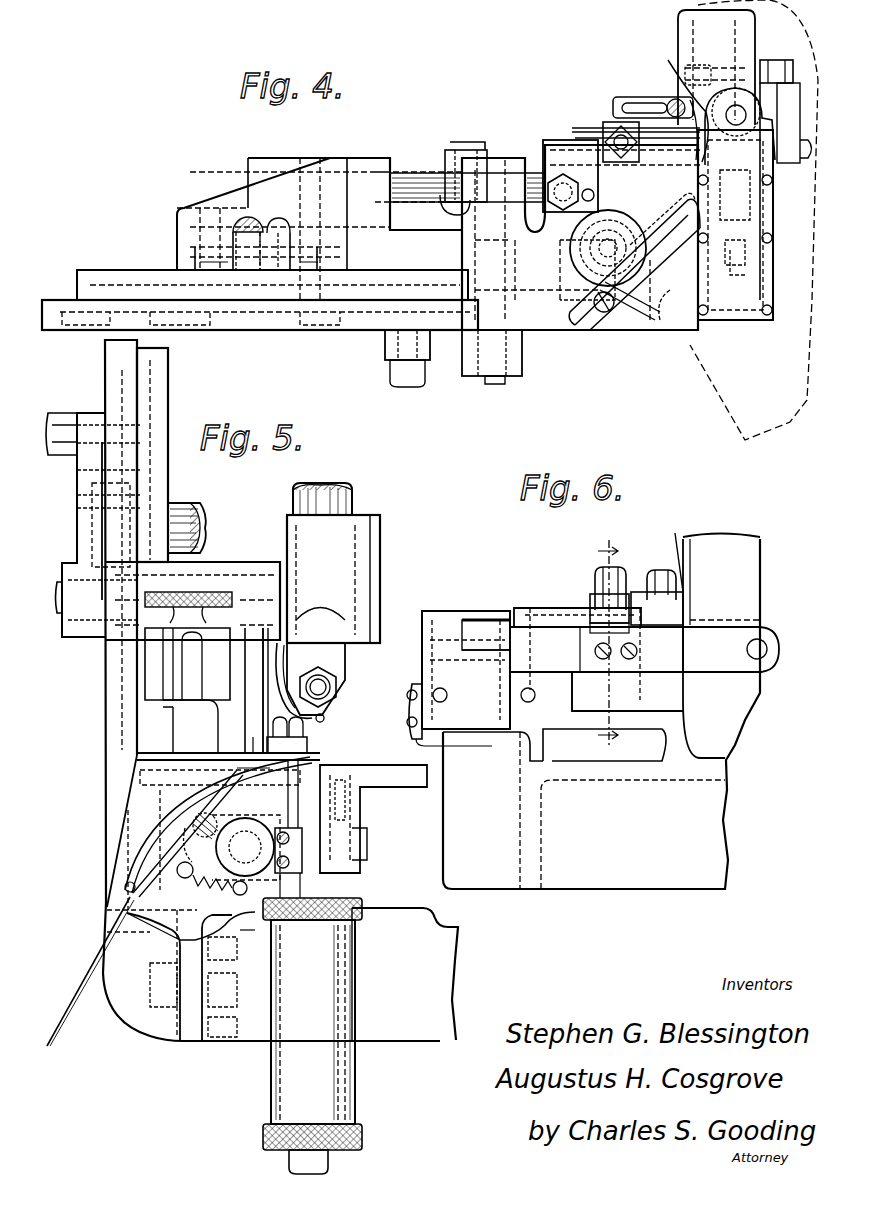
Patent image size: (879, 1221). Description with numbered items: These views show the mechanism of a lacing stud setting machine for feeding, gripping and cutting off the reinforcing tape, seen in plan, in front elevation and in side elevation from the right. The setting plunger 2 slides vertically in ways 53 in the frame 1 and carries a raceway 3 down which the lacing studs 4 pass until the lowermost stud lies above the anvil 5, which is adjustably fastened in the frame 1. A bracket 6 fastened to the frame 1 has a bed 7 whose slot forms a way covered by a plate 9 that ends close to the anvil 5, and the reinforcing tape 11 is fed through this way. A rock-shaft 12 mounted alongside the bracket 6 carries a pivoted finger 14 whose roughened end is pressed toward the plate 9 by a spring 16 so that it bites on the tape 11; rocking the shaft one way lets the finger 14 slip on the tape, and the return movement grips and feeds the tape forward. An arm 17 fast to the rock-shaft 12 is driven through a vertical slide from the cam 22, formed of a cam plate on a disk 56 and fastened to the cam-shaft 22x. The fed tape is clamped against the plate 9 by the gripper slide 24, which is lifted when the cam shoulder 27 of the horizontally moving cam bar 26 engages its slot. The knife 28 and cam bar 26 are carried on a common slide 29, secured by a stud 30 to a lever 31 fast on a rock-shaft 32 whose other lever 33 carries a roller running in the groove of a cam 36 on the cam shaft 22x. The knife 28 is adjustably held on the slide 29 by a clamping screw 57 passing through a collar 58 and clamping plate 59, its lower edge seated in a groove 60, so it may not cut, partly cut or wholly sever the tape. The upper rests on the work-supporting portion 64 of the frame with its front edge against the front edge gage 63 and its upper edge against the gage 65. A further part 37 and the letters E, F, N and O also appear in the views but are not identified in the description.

In FIG. 4, the frame 1 is at (580, 237).
In FIG. 5, the frame 1 is at (280, 801).
In FIG. 6, the frame 1 is at (601, 711).
In FIG. 5, the setting plunger 2 is at (342, 662).
In FIG. 5, the raceway 3 is at (287, 690).
In FIG. 5, the lacing studs 4 is at (330, 732).
In FIG. 4, the anvil 5 is at (732, 105).
In FIG. 5, the anvil 5 is at (288, 1057).
In FIG. 5, the bracket 6 is at (182, 945).
In FIG. 5, the bed 7 is at (133, 880).
In FIG. 4, the plate 9 is at (764, 276).
In FIG. 5, the plate 9 is at (150, 860).
In FIG. 5, the reinforcing tape 11 is at (88, 976).
In FIG. 4, the rock-shaft 12 is at (403, 180).
In FIG. 5, the rock-shaft 12 is at (246, 847).
In FIG. 5, the finger 14 is at (190, 833).
In FIG. 5, the spring 16 is at (212, 884).
In FIG. 4, the arm 17 is at (250, 208).
In FIG. 4, the cam 22 is at (140, 270).
In FIG. 5, the cam 22 is at (150, 396).
In FIG. 4, the cam-shaft 22x is at (250, 222).
In FIG. 5, the cam-shaft 22x is at (207, 525).
In FIG. 6, the gripper slide 24 is at (480, 620).
In FIG. 6, the cam bar 26 is at (596, 653).
In FIG. 6, the cam shoulder 27 is at (512, 650).
In FIG. 4, the knife 28 is at (585, 128).
In FIG. 5, the knife 28 is at (322, 770).
In FIG. 6, the knife 28 is at (545, 615).
In FIG. 4, the slide 29 is at (545, 148).
In FIG. 6, the slide 29 is at (644, 649).
In FIG. 4, the stud 30 is at (468, 142).
In FIG. 4, the lever 31 is at (450, 190).
In FIG. 5, the lever 31 is at (272, 763).
In FIG. 4, the rock-shaft 32 is at (492, 384).
In FIG. 5, the rock-shaft 32 is at (56, 604).
In FIG. 4, the lever 33 is at (447, 355).
In FIG. 5, the lever 33 is at (78, 512).
In FIG. 4, the cam 36 is at (52, 300).
In FIG. 5, the cam 36 is at (106, 366).
In FIG. 6, the bracket 37 is at (418, 742).
In FIG. 5, the ways 53 is at (365, 558).
In FIG. 4, the disk 56 is at (80, 270).
In FIG. 4, the clamping screw 57 is at (625, 125).
In FIG. 6, the clamping screw 57 is at (600, 572).
In FIG. 4, the collar 58 is at (608, 165).
In FIG. 6, the collar 58 is at (628, 592).
In FIG. 4, the clamping plate 59 is at (642, 165).
In FIG. 6, the clamping plate 59 is at (598, 598).
In FIG. 6, the groove 60 is at (600, 666).
In FIG. 4, the front edge gage 63 is at (688, 100).
In FIG. 4, the work-supporting portion 64 is at (752, 32).
In FIG. 4, the gage 65 is at (630, 318).
In FIG. 5, the direction E is at (253, 734).
In FIG. 5, the direction F is at (251, 943).
In FIG. 6, the direction N is at (608, 631).
In FIG. 6, the direction O is at (608, 746).